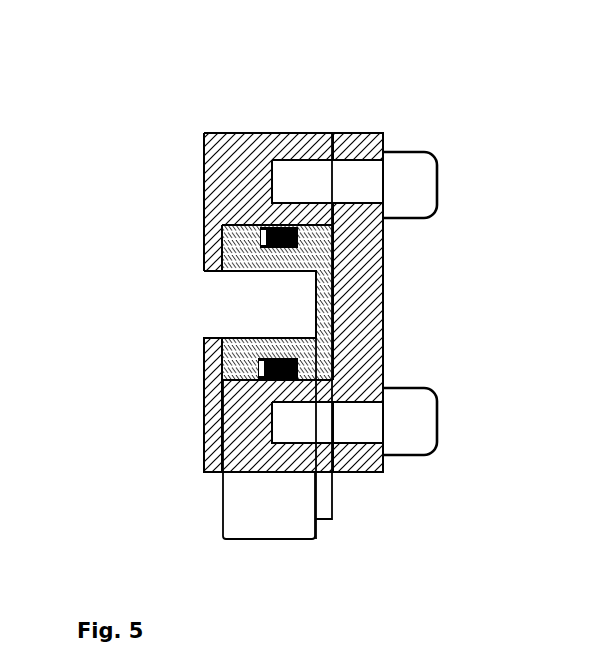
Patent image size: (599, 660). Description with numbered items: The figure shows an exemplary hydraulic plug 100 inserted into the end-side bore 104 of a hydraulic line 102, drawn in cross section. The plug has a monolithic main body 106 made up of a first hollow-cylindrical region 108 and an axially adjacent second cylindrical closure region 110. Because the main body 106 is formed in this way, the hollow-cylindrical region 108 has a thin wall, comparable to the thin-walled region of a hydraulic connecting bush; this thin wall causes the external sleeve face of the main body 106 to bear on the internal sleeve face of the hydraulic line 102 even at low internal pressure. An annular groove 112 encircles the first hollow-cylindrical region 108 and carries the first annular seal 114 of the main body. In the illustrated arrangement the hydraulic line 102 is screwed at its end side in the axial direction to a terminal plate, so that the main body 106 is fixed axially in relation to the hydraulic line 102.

The hydraulic plug 100 is at (177, 435).
The hydraulic line 102 is at (248, 145).
The end-side bore 104 is at (203, 270).
The main body 106 is at (275, 273).
The hollow-cylindrical region 108 is at (269, 539).
The cylindrical closure region 110 is at (322, 521).
The annular groove 112 is at (262, 234).
The first annular seal 114 is at (297, 362).